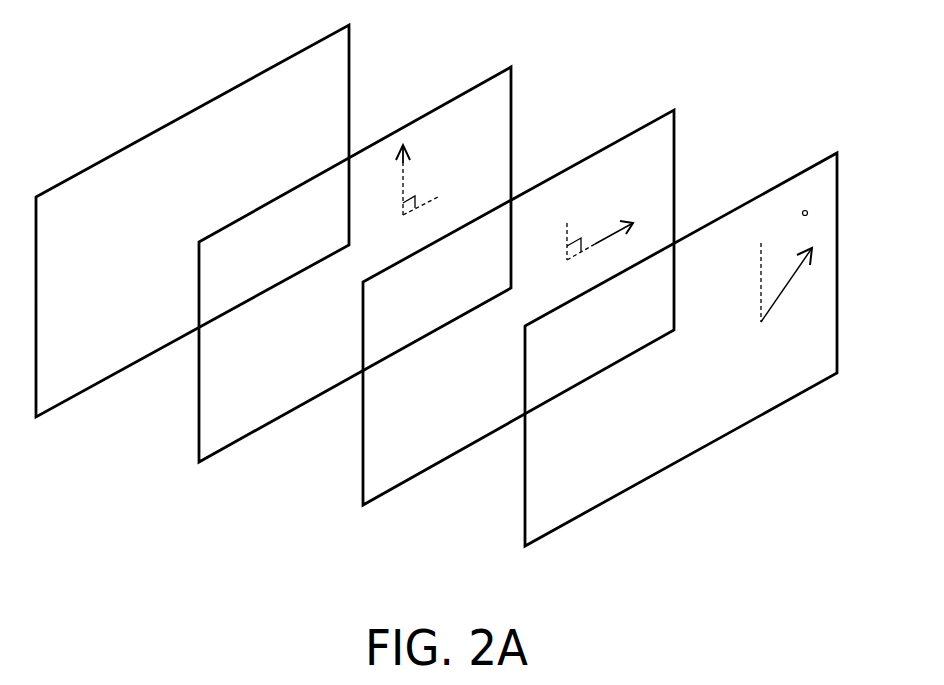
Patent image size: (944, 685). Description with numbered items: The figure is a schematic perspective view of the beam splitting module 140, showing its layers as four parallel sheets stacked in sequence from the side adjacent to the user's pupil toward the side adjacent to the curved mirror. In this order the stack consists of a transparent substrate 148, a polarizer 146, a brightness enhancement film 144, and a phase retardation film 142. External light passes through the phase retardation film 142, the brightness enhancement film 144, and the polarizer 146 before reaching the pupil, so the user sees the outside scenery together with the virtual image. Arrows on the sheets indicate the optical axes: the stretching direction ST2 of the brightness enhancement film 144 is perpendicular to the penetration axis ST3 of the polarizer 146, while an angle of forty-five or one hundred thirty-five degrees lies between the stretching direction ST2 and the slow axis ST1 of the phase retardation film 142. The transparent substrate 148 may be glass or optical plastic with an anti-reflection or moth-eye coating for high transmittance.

The beam splitting module 140 is at (451, 310).
The phase retardation film 142 is at (579, 478).
The brightness enhancement film 144 is at (415, 435).
The polarizer 146 is at (252, 392).
The transparent substrate 148 is at (89, 352).
The slow axis ST1 is at (761, 273).
The stretching direction ST2 is at (598, 250).
The penetration axis ST3 is at (403, 178).